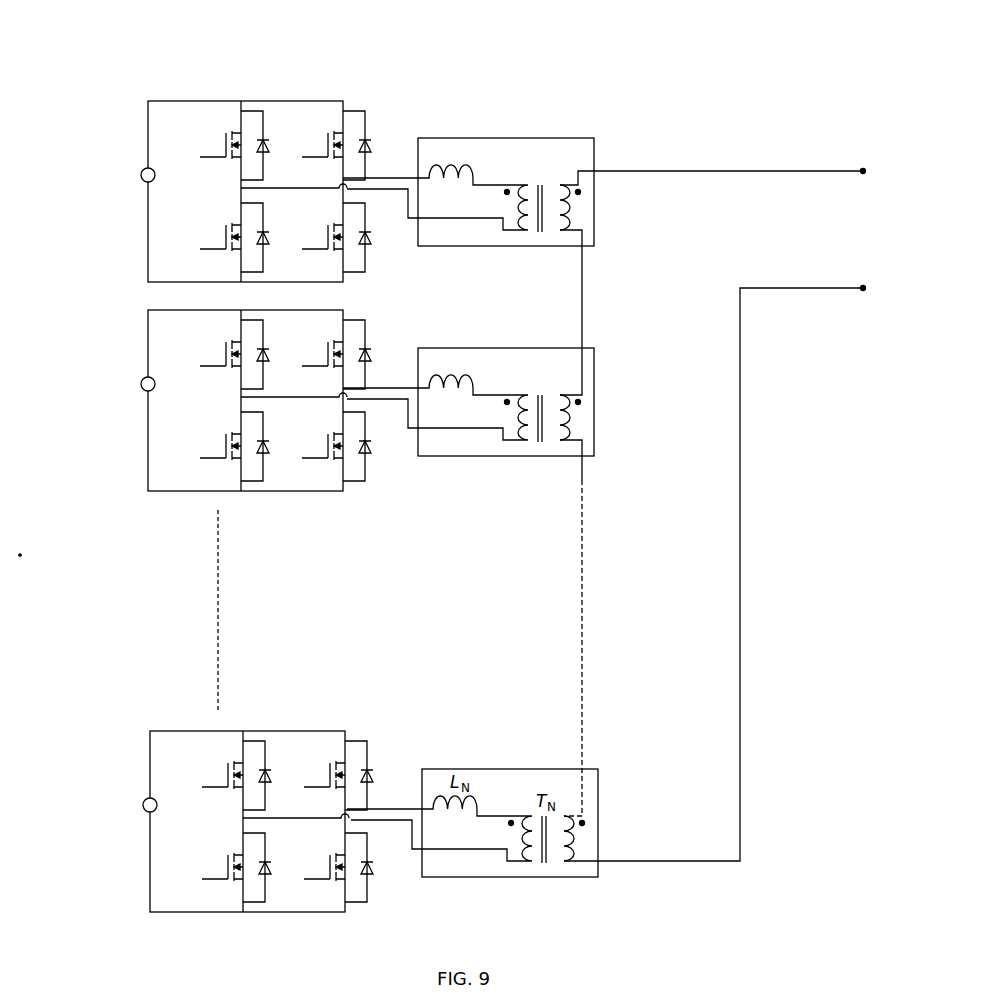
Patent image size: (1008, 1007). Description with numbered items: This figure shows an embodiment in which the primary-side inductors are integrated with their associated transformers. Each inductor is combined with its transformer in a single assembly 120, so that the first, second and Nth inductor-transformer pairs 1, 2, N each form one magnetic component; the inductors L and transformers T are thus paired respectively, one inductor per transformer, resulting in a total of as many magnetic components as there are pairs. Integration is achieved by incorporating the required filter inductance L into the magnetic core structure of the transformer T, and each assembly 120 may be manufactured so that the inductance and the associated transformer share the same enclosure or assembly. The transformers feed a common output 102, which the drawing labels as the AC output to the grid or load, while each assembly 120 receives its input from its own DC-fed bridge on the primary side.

The assembly 120 is at (550, 138).
The AC output to grid or load 102 is at (863, 140).
The bridge #1 (full-bridge inverter) 1 is at (213, 185).
The bridge #2 (full-bridge inverter) 2 is at (211, 399).
The bridge #N (full-bridge inverter) N is at (211, 817).